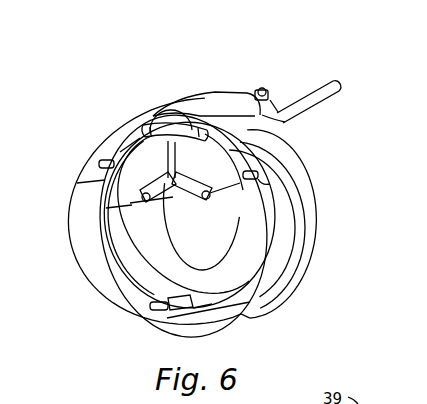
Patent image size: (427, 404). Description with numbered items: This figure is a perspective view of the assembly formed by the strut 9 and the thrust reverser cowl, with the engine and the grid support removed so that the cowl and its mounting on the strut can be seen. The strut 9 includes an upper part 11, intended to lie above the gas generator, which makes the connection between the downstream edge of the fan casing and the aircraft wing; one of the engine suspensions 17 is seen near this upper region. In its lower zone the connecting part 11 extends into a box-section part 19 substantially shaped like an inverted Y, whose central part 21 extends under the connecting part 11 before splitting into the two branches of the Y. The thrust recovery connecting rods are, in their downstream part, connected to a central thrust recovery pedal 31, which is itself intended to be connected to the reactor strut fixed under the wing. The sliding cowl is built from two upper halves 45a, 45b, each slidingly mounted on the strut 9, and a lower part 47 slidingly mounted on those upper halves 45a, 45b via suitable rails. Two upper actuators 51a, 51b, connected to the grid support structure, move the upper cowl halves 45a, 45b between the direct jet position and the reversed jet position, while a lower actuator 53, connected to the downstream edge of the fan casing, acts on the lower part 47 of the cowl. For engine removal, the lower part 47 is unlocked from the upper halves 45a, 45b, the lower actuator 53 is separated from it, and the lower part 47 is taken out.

The strut 9 is at (181, 139).
The upper part 11 is at (183, 102).
The suspension 17 is at (237, 85).
The box-section part 19 is at (183, 193).
The central part 21 is at (228, 172).
The central thrust recovery pedal 31 is at (318, 97).
The upper half 45a is at (118, 139).
The upper half 45b is at (295, 153).
The lower part 47 is at (111, 300).
The upper actuator 51a is at (107, 160).
The upper actuator 51b is at (253, 175).
The lower actuator 53 is at (165, 308).